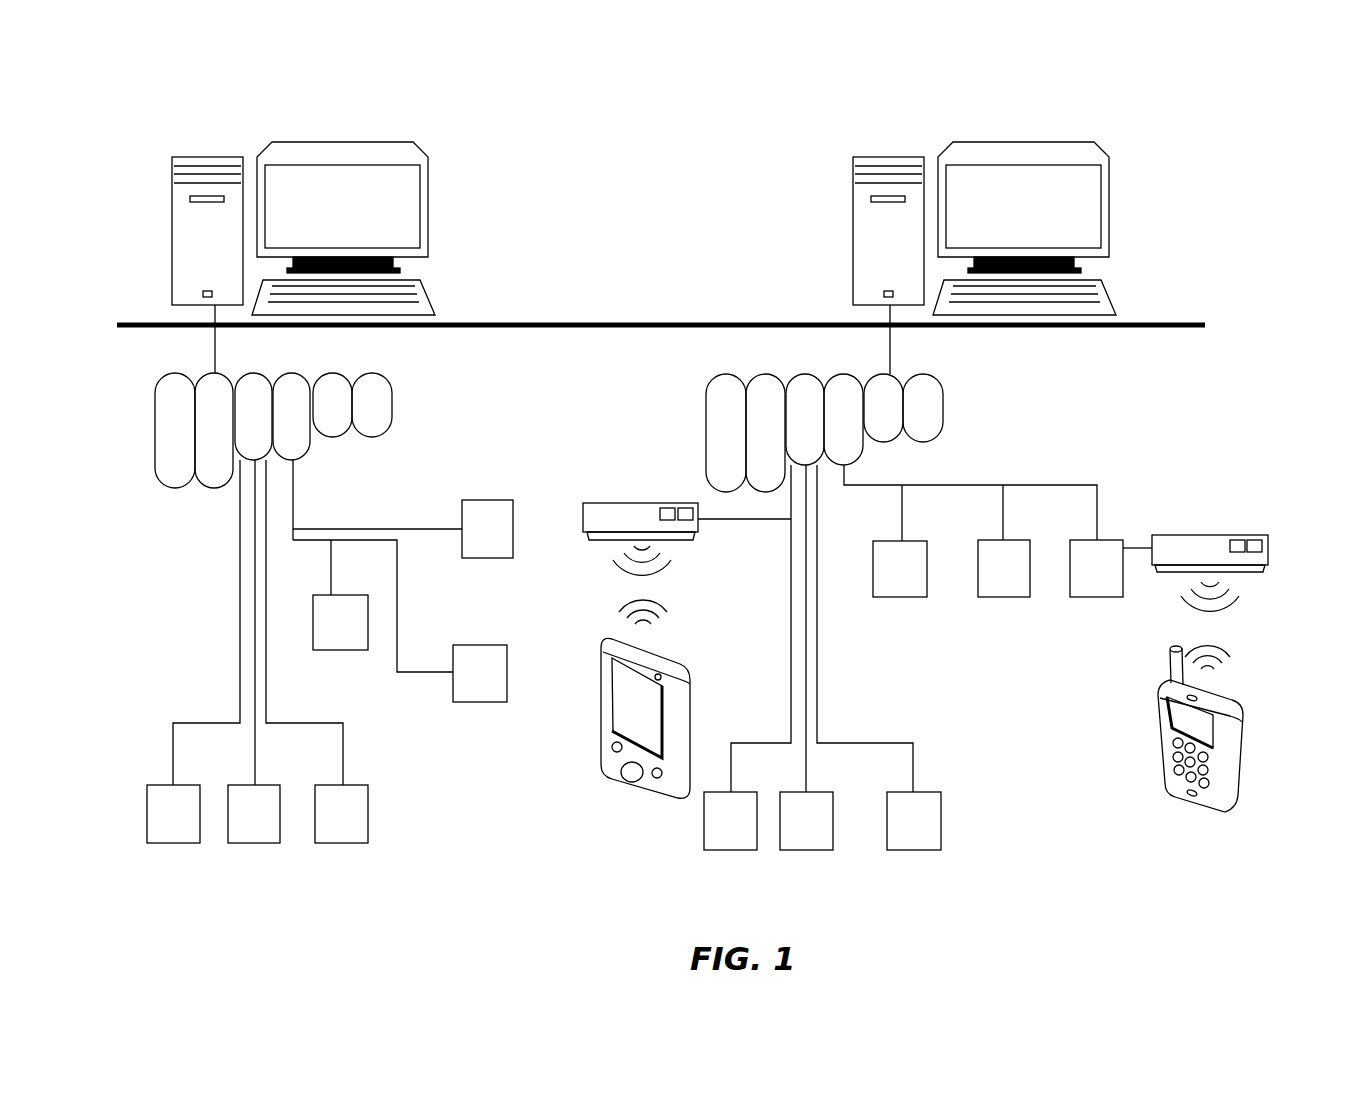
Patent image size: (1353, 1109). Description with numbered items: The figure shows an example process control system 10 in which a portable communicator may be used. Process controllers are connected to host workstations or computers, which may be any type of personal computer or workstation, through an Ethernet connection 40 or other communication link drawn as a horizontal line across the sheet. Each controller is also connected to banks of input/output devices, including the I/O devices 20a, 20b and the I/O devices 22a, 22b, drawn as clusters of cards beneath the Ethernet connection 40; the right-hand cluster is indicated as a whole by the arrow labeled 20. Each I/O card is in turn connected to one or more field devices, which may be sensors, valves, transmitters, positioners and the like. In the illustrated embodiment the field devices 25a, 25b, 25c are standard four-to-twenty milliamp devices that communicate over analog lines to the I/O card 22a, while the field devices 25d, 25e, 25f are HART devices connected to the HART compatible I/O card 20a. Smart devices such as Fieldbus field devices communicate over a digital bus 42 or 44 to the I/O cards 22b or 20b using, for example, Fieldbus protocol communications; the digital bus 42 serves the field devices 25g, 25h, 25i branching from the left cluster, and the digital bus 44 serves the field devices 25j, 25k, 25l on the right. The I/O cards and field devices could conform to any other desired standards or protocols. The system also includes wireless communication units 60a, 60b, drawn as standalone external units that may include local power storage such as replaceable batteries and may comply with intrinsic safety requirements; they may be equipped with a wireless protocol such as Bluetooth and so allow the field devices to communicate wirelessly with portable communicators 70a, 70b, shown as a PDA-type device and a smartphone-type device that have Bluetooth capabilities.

The process control system 10 is at (665, 196).
The bank of input/output devices 20 is at (966, 408).
The I/O device 20a is at (835, 360).
The I/O device 20b is at (853, 375).
The I/O device 22a is at (285, 358).
The I/O device 22b is at (303, 373).
The field device 25a is at (182, 785).
The field device 25b is at (267, 785).
The field device 25c is at (368, 790).
The field device 25d is at (733, 792).
The field device 25e is at (833, 792).
The field device 25f is at (920, 792).
The field device 25g is at (488, 500).
The field device 25h is at (340, 595).
The field device 25i is at (503, 645).
The field device 25j is at (902, 538).
The field device 25k is at (1015, 540).
The field device 25l is at (1100, 535).
The Ethernet connection 40 is at (492, 323).
The digital bus 42 is at (297, 500).
The digital bus 44 is at (988, 482).
The wireless communication unit 60a is at (598, 502).
The wireless communication unit 60b is at (1185, 537).
The portable communicator 70a is at (685, 662).
The portable communicator 70b is at (1237, 697).